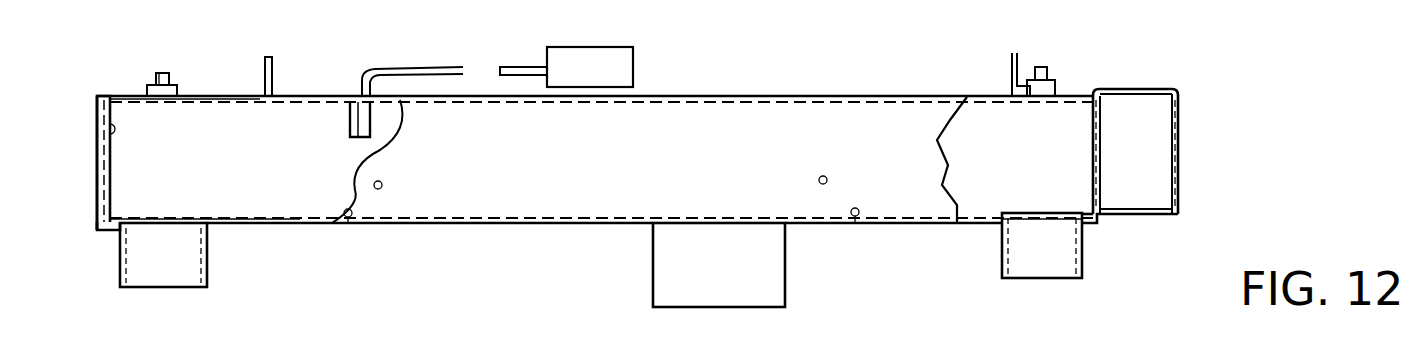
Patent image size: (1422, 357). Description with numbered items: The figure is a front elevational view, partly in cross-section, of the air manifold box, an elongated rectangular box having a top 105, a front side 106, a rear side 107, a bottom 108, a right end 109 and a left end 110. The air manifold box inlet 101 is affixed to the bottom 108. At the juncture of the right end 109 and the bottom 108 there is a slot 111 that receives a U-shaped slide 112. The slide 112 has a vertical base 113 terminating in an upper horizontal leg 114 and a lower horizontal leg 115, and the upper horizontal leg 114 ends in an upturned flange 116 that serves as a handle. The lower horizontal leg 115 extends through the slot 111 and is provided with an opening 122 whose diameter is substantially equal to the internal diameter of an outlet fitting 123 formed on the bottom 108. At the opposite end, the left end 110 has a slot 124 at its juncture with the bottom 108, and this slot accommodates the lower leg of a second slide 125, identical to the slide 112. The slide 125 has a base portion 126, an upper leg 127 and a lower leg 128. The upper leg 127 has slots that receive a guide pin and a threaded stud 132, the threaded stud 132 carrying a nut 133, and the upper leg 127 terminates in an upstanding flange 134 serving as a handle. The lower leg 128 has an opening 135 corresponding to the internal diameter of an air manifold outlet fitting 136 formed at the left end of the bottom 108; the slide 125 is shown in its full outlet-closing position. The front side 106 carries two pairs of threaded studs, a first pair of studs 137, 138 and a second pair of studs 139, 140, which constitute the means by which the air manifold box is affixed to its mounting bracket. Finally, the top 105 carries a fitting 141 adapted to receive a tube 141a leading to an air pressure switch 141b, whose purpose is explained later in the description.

The air manifold box inlet 101 is at (773, 270).
The top 105 is at (708, 97).
The front side 106 is at (885, 140).
The rear side 107 is at (190, 143).
The bottom 108 is at (464, 226).
The right end 109 is at (1100, 124).
The left end 110 is at (97, 121).
The slot 111 is at (1098, 210).
The U-shaped slide 112 is at (1190, 164).
The vertical base 113 is at (1179, 118).
The upper horizontal leg 114 is at (1127, 89).
The lower horizontal leg 115 is at (1150, 216).
The upturned flange 116 is at (1012, 63).
The opening 122 is at (1070, 213).
The outlet fitting 123 is at (1083, 258).
The slot 124 is at (115, 219).
The slide 125 is at (88, 160).
The base portion 126 is at (97, 206).
The upper leg 127 is at (196, 96).
The lower leg 128 is at (190, 219).
The threaded stud 132 is at (166, 73).
The nut 133 is at (150, 88).
The upstanding flange 134 is at (272, 62).
The opening 135 is at (262, 210).
The air manifold outlet fitting 136 is at (207, 263).
The stud 137 is at (822, 176).
The stud 138 is at (855, 223).
The stud 139 is at (383, 182).
The stud 140 is at (348, 223).
The fitting 141 is at (350, 124).
The tube 141a is at (522, 67).
The air pressure switch 141b is at (633, 60).